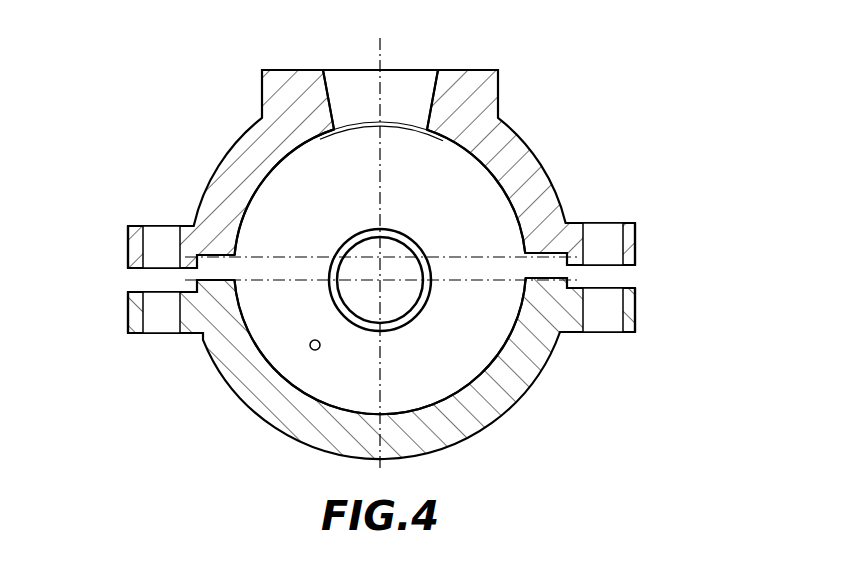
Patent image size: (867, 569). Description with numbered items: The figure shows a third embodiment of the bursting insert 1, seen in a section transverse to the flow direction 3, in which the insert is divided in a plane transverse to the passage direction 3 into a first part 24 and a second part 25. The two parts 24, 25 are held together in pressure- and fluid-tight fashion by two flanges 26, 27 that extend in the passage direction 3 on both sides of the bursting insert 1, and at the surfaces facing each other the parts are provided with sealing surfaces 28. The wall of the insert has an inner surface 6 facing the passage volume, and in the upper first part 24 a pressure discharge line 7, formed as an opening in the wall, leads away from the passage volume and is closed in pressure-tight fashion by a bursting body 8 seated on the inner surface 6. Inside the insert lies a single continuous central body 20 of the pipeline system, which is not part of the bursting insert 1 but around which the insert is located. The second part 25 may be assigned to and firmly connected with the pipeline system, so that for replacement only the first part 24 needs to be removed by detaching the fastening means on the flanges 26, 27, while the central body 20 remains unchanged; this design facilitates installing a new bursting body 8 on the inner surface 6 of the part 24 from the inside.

The bursting insert 1 is at (396, 240).
The flow direction 3 is at (320, 349).
The inner surface 6 is at (477, 160).
The pressure discharge line 7 is at (413, 92).
The bursting body 8 is at (367, 130).
The central body 20 is at (346, 242).
The first part 24 is at (532, 188).
The second part 25 is at (538, 358).
The flange 26 is at (630, 207).
The flange 27 is at (148, 214).
The sealing surfaces 28 is at (208, 262).